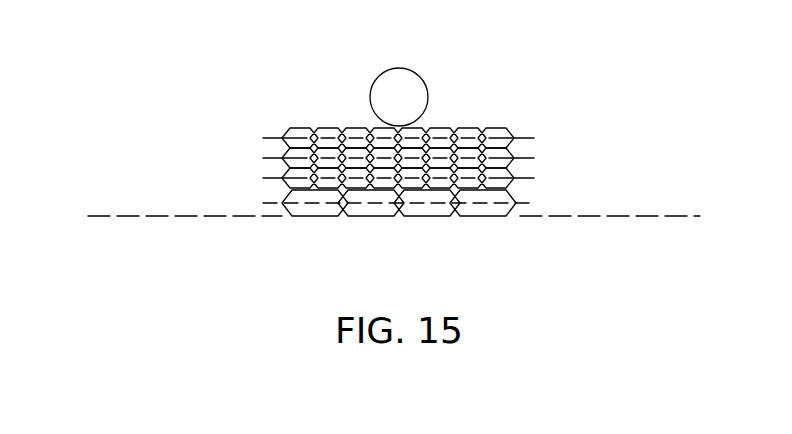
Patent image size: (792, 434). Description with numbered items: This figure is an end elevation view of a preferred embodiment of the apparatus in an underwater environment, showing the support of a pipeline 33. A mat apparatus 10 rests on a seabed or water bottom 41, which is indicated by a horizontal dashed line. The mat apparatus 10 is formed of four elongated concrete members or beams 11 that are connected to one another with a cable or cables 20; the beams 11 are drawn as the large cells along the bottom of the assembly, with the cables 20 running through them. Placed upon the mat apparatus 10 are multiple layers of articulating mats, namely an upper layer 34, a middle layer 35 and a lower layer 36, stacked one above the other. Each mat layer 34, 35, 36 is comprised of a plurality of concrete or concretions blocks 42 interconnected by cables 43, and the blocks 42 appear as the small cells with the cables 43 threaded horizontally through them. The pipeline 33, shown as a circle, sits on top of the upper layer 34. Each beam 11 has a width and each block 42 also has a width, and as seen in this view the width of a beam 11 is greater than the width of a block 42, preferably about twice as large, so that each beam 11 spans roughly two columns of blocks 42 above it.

The mat apparatus 10 is at (90, 75).
The elongated concrete members or beams 11 is at (370, 217).
The cable or cables 20 is at (490, 202).
The pipeline 33 is at (407, 67).
The upper layer 34 is at (513, 130).
The middle layer 35 is at (512, 163).
The lower layer 36 is at (283, 183).
The seabed or water bottom 41 is at (701, 215).
The concrete or concretions blocks 42 is at (326, 127).
The cables 43 is at (272, 158).